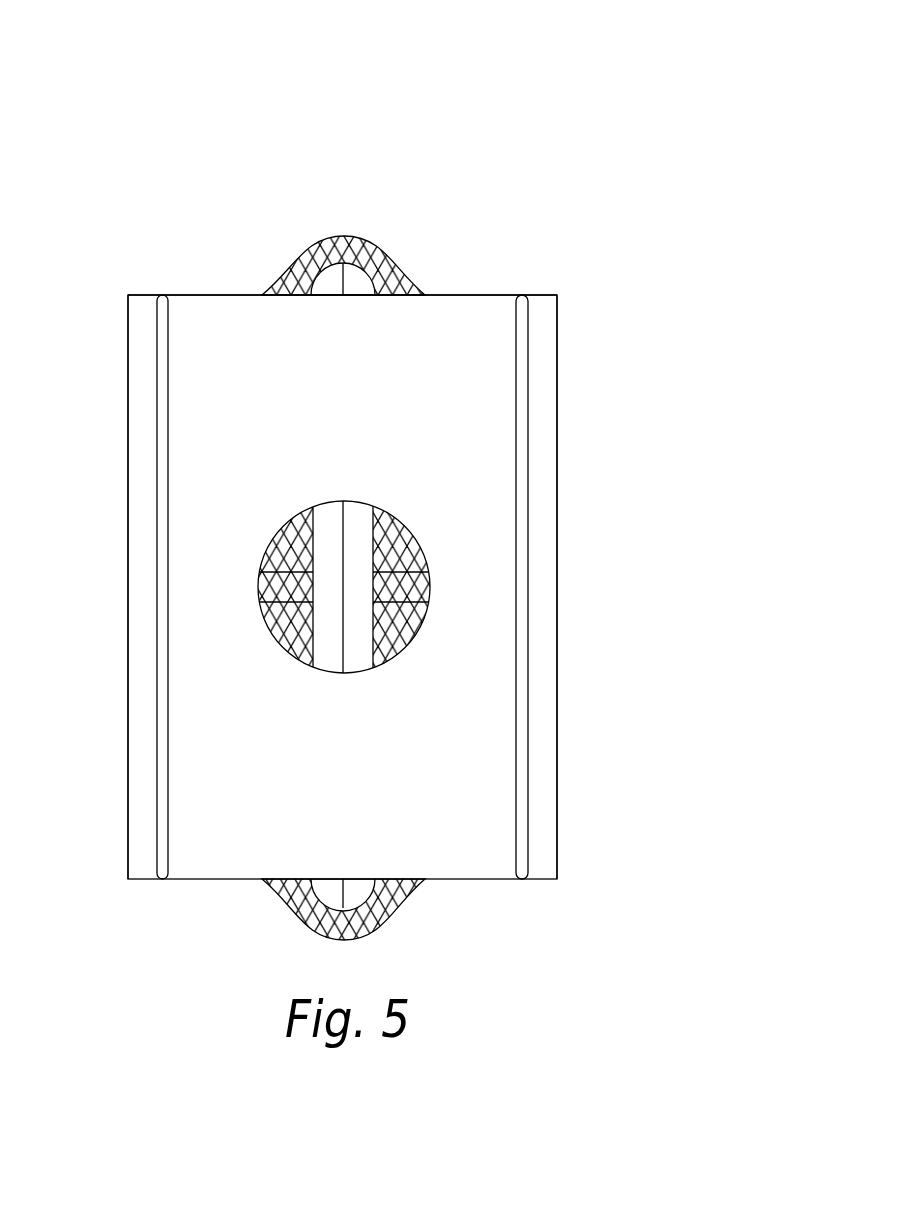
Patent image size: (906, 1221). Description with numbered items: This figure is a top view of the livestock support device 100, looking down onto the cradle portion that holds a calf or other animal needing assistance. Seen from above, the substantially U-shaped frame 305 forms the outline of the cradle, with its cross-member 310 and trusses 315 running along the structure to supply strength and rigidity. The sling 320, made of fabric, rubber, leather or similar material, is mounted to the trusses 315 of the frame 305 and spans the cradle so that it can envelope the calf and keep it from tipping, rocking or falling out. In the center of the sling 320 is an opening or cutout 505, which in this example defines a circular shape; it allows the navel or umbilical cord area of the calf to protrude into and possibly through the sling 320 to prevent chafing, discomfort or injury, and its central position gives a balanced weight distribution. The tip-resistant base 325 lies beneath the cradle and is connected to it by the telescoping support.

The livestock support device 100 is at (683, 213).
The frame 305 is at (542, 421).
The cross-member 310 is at (330, 628).
The trusses 315 is at (557, 665).
The sling 320 is at (465, 295).
The base 325 is at (310, 262).
The cutout 505 is at (278, 516).